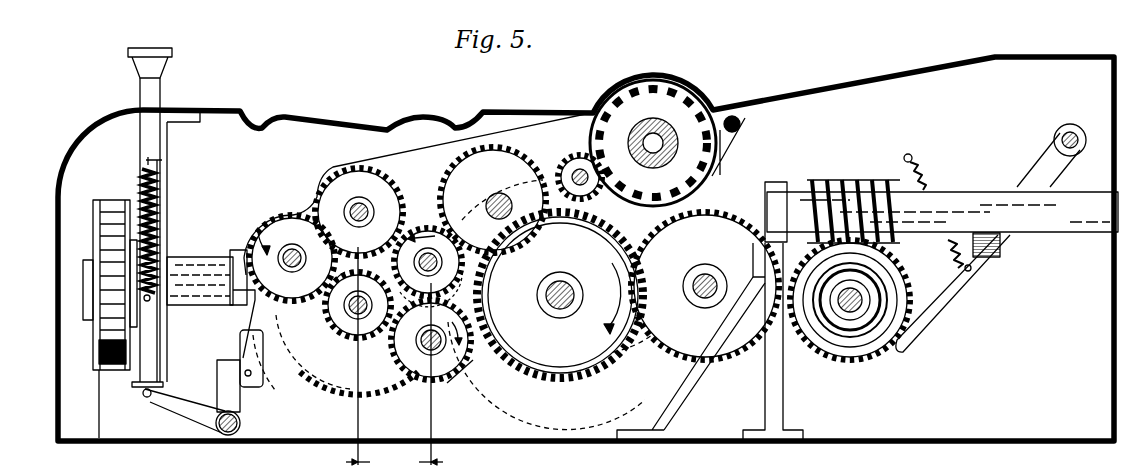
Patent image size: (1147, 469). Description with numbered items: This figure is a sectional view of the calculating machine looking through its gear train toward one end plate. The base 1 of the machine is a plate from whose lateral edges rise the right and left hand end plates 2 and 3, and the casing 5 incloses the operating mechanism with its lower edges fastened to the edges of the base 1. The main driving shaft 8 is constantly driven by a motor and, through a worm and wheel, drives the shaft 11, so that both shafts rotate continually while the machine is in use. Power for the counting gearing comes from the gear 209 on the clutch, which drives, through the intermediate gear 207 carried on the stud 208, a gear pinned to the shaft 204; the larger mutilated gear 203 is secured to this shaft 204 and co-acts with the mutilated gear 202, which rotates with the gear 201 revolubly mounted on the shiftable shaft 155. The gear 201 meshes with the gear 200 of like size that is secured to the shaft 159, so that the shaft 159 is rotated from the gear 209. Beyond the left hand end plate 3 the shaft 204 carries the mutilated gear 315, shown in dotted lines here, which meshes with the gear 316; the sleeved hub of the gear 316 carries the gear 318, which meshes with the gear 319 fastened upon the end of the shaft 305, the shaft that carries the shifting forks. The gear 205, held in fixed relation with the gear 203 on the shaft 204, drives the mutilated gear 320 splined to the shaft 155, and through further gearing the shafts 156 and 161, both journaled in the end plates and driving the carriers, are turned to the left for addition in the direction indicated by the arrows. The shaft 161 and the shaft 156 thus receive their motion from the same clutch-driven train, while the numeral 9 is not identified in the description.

The base 1 is at (1022, 445).
The right hand plate 2 is at (88, 203).
The left hand plate 3 is at (551, 404).
The casing 5 is at (203, 113).
The main driving shaft 8 is at (1078, 238).
The gear 9 is at (428, 267).
The shaft 11 is at (847, 314).
The shiftable shaft 155 is at (431, 374).
The shaft 156 is at (432, 263).
The shaft 159 is at (355, 314).
The shaft 161 is at (293, 268).
The gear 200 is at (352, 347).
The gear 201 is at (438, 400).
The mutilated gear 202 is at (417, 397).
The mutilated gear 203 is at (560, 295).
The shaft 204 is at (567, 288).
The gear 205 is at (565, 386).
The intermediate gear 207 is at (742, 362).
The stud 208 is at (708, 278).
The gear 209 is at (907, 326).
The shaft 305 is at (359, 212).
The mutilated gear 315 is at (514, 423).
The gear 316 is at (330, 410).
The gear 318 is at (338, 345).
The gear 319 is at (390, 199).
The mutilated gear 320 is at (288, 237).